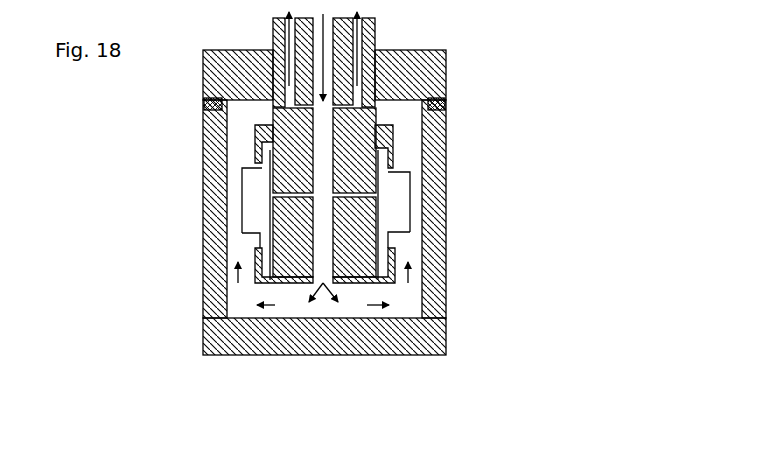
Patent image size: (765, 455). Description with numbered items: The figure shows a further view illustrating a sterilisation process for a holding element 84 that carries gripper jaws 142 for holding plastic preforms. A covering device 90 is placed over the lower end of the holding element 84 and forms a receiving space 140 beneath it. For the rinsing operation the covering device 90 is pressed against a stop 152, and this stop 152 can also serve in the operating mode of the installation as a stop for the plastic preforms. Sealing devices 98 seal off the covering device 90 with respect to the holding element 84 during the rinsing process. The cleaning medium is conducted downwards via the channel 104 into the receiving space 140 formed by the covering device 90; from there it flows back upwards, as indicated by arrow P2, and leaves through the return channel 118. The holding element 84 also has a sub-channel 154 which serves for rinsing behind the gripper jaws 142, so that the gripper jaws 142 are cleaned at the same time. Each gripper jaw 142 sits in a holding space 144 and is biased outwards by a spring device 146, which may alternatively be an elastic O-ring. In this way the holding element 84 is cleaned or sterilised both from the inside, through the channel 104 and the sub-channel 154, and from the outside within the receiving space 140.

The covering device 90 is at (186, 261).
The sealing devices 98 is at (440, 104).
The return channel 118 is at (275, 31).
The channel 104 is at (322, 107).
The sub-channel 154 is at (283, 213).
The stop 152 is at (258, 100).
The holding space 144 is at (393, 143).
The gripper jaw 142 is at (400, 179).
The holding element 84 is at (380, 177).
The spring device 146 is at (385, 223).
The receiving space 140 is at (377, 293).
The arrow P2 is at (235, 278).